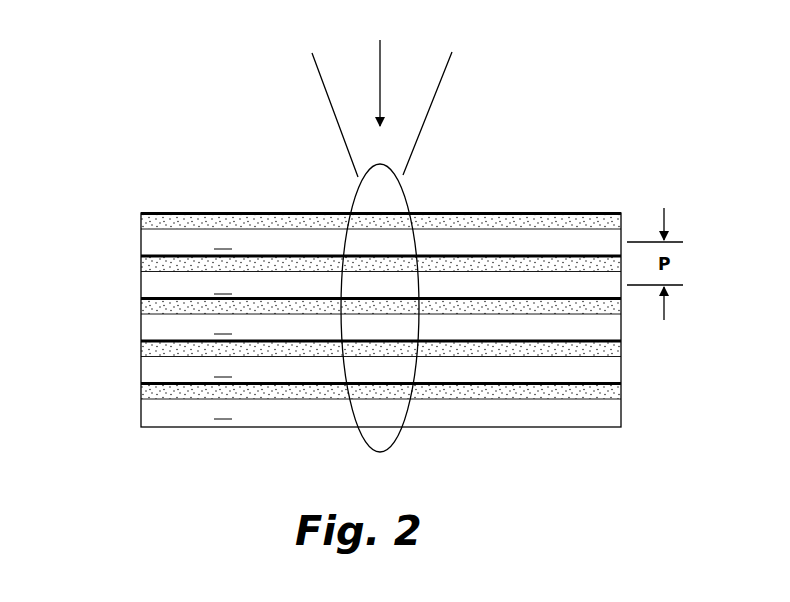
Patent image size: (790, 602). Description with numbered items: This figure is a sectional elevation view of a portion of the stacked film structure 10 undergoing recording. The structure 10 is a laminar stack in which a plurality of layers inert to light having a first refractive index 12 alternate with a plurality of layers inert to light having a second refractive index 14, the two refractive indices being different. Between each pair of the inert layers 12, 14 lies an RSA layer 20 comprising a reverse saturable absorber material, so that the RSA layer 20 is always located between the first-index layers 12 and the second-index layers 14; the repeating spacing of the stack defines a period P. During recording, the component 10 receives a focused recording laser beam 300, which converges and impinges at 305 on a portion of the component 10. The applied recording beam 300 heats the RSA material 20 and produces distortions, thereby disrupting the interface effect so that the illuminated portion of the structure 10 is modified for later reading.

The stacked film structure 10 is at (619, 156).
The layers inert to light having a first refractive index 12 is at (141, 225).
The layers inert to light having a second refractive index 14 is at (381, 324).
The RSA layer 20 is at (141, 213).
The focused recording laser beam 300 is at (381, 72).
The impingement location 305 is at (398, 439).